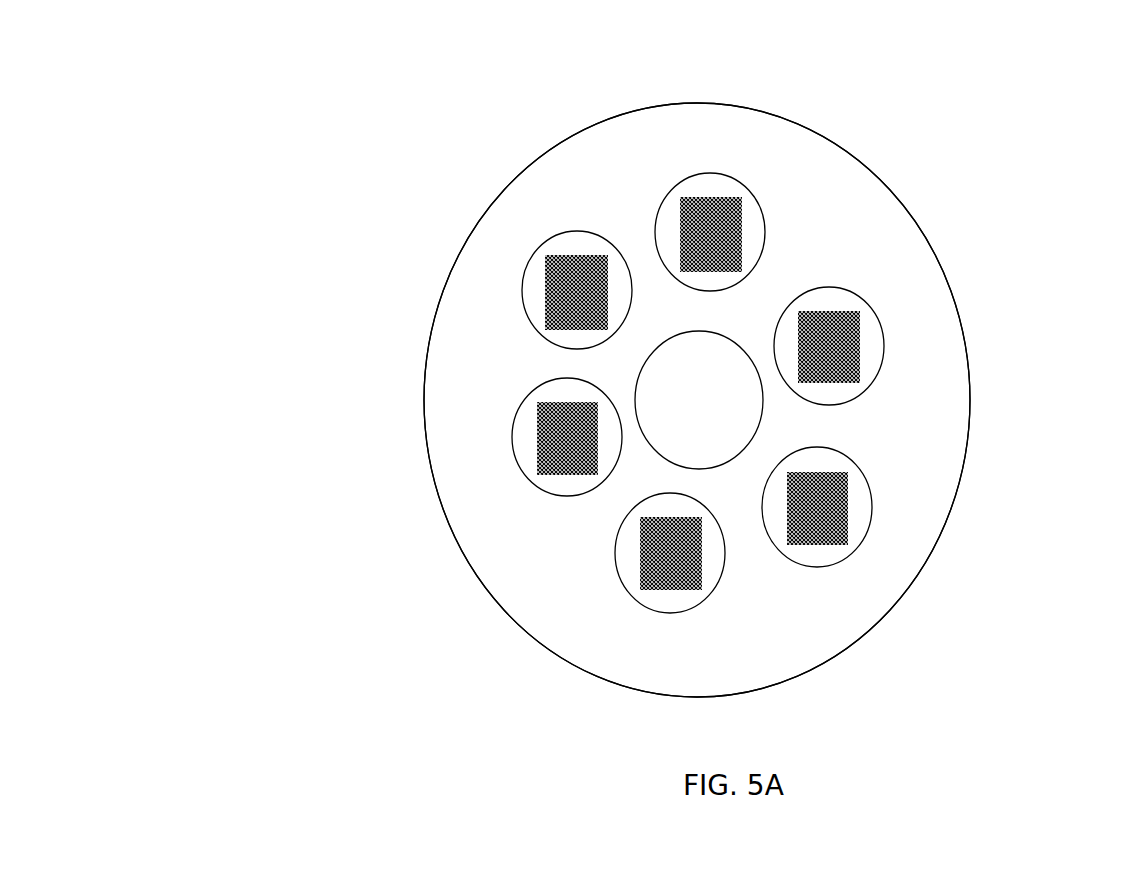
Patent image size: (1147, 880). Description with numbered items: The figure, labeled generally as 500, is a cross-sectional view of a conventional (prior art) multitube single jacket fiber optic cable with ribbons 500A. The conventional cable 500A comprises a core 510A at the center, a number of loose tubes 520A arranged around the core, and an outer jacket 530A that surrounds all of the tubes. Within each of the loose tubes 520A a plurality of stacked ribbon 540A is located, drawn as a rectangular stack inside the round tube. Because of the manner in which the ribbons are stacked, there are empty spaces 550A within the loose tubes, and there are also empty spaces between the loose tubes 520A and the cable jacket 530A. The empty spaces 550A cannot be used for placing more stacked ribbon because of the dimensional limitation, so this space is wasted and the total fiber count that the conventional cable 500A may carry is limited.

The preform cross-section view 500 is at (223, 46).
The conventional multitube single jacket fiber optic cable 500A is at (907, 625).
The core 510A is at (707, 387).
The loose tubes 520A is at (763, 218).
The jacket 530A is at (943, 532).
The stacked ribbon 540A is at (857, 325).
The empty spaces 550A is at (563, 388).